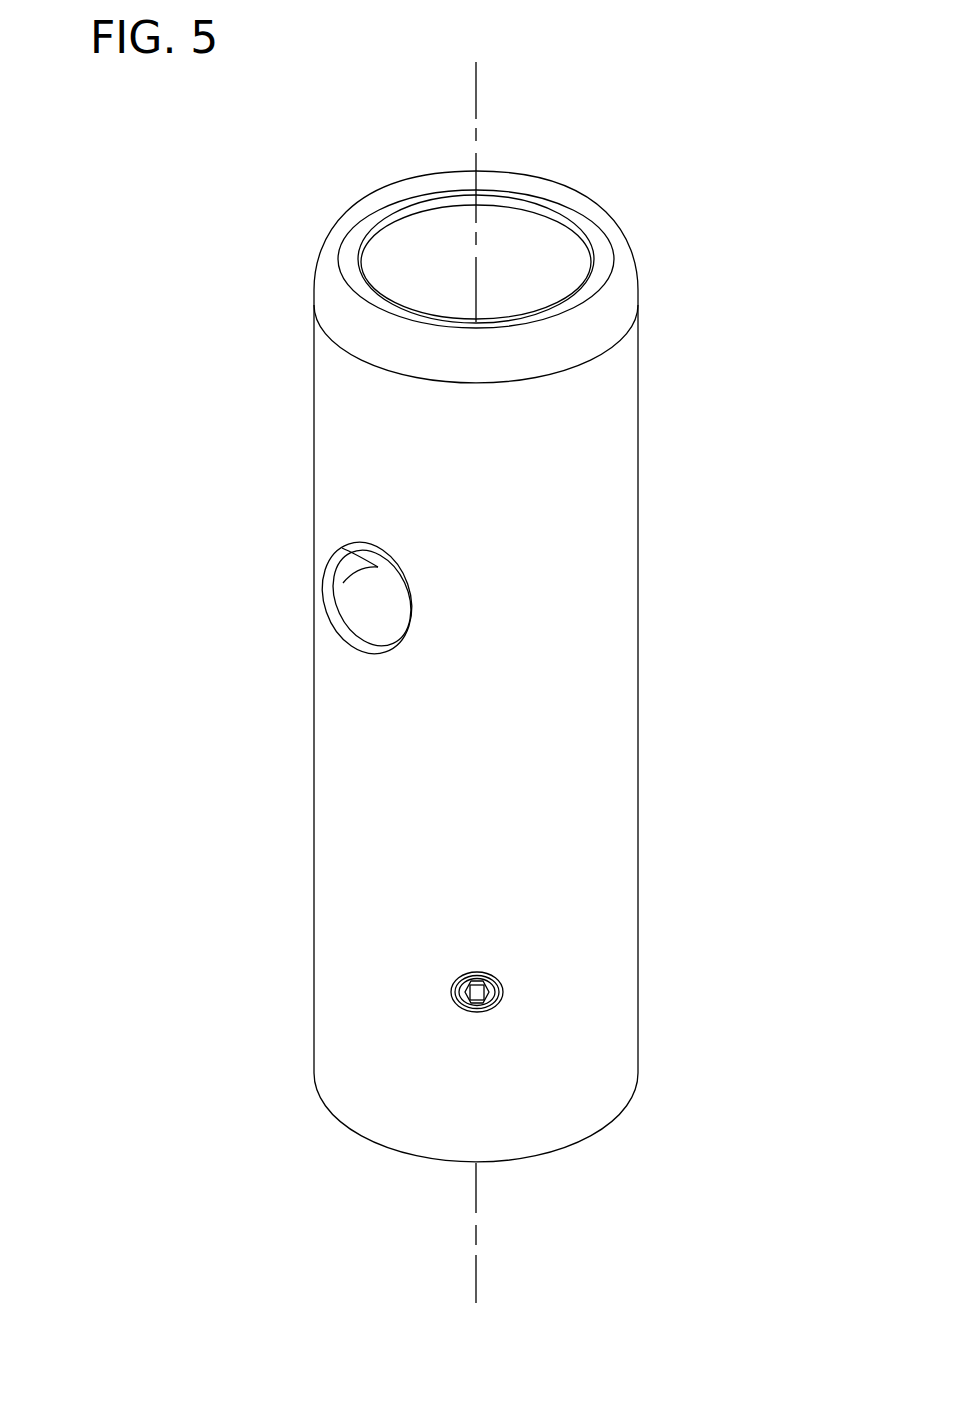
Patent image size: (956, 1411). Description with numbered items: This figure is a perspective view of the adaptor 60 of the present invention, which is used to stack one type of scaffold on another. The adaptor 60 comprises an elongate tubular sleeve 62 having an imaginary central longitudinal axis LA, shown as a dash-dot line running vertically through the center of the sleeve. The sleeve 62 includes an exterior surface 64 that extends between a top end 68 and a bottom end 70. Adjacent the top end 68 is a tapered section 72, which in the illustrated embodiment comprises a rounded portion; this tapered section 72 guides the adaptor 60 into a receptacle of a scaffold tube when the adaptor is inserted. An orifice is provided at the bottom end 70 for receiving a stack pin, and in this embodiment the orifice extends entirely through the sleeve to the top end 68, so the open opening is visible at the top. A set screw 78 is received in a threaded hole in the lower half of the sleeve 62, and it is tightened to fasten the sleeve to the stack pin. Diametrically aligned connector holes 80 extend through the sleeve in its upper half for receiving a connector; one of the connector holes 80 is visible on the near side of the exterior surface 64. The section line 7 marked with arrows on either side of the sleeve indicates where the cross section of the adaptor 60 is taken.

The adaptor 60 is at (226, 176).
The elongate tubular sleeve 62 is at (598, 749).
The exterior surface 64 is at (418, 1100).
The top end 68 is at (518, 183).
The bottom end 70 is at (397, 1153).
The tapered section 72 is at (620, 277).
The set screw 78 is at (492, 1005).
The connector holes 80 is at (336, 608).
The section line 7- 7 is at (710, 486).
The central longitudinal axis LA is at (477, 1272).